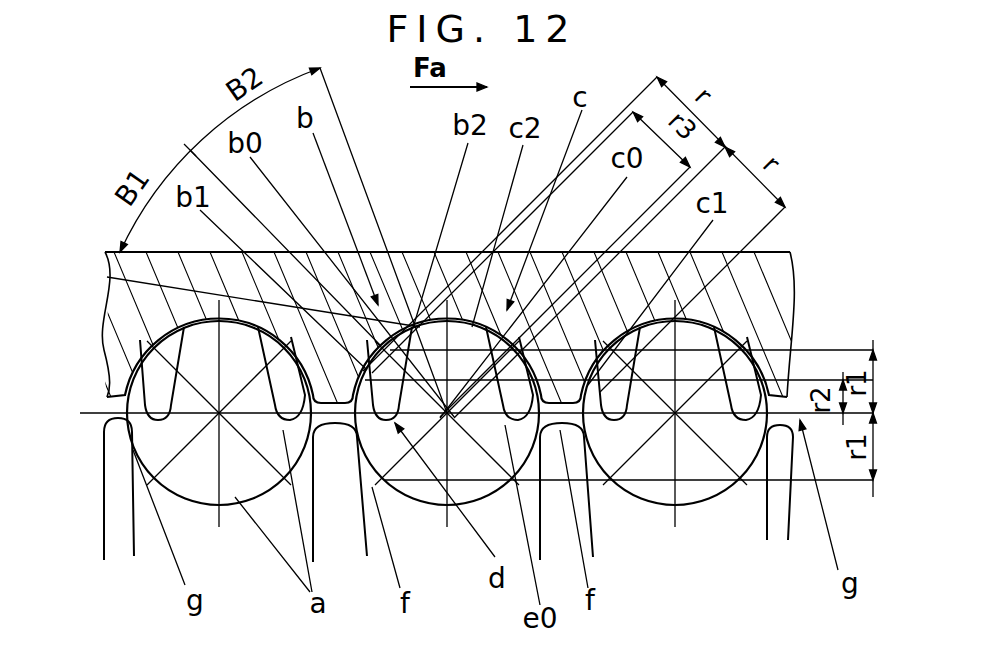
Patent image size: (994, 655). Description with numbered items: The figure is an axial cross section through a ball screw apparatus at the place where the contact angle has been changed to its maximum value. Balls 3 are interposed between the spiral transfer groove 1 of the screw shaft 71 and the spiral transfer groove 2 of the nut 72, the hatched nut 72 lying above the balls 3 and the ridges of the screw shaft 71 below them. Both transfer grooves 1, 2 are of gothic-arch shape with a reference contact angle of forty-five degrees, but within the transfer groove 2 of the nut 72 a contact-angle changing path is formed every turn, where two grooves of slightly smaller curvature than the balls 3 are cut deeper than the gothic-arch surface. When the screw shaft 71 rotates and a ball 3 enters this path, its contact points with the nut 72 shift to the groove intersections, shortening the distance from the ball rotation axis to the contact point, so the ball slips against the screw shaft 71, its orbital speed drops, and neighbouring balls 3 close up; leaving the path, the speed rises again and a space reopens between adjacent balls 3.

The transfer groove of the screw shaft 1 is at (687, 507).
The transfer groove of the nut 2 is at (755, 335).
The balls 3 is at (652, 457).
The screw shaft 71 is at (745, 518).
The nut 72 is at (775, 300).